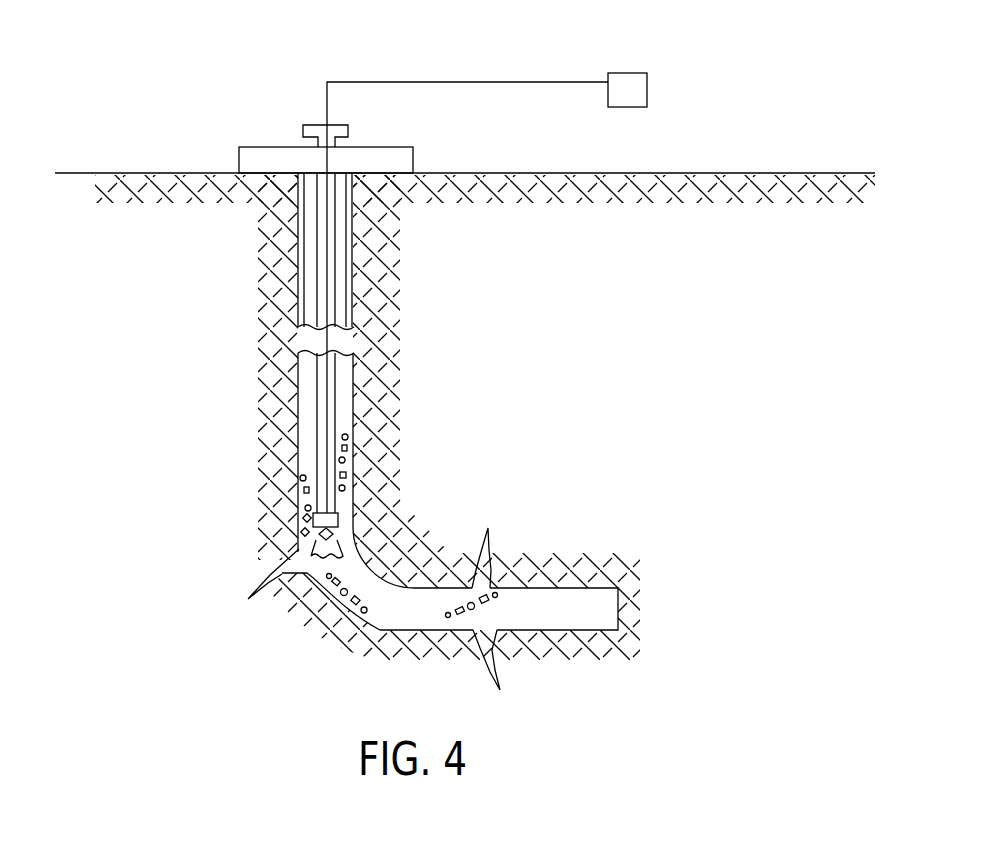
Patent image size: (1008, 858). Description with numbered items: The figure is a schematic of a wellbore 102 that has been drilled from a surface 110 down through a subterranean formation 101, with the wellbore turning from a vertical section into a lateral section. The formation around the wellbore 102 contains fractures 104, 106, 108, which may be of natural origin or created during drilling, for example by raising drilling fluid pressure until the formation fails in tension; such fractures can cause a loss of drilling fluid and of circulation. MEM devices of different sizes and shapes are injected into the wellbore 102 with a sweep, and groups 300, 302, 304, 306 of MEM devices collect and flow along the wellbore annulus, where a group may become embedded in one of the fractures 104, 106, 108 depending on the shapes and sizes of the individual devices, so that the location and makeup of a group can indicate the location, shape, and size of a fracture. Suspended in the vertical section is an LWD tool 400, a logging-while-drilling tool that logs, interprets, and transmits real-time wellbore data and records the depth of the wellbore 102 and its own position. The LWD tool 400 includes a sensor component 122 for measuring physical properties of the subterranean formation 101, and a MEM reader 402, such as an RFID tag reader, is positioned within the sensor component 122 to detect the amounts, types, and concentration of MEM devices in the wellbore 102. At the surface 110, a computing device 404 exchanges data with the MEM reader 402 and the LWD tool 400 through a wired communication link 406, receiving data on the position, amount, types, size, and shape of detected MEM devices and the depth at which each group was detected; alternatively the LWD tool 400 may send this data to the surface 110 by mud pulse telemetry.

The subterranean formation 101 is at (273, 257).
The wellbore 102 is at (357, 297).
The fracture 104 is at (262, 597).
The fracture 106 is at (495, 538).
The fracture 108 is at (500, 673).
The surface 110 is at (542, 170).
The sensor component 122 is at (307, 548).
The group of MEM devices 300 is at (298, 507).
The group of MEM devices 302 is at (354, 463).
The group of MEM devices 304 is at (328, 636).
The group of MEM devices 306 is at (472, 630).
The LWD tool 400 is at (342, 392).
The MEM reader 402 is at (356, 527).
The computing device 404 is at (647, 90).
The wired communication link 406 is at (322, 80).